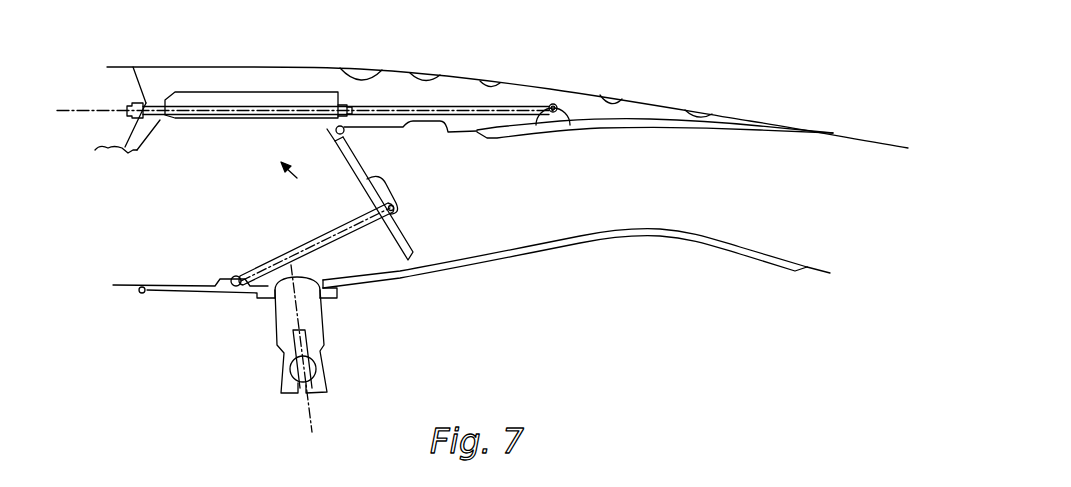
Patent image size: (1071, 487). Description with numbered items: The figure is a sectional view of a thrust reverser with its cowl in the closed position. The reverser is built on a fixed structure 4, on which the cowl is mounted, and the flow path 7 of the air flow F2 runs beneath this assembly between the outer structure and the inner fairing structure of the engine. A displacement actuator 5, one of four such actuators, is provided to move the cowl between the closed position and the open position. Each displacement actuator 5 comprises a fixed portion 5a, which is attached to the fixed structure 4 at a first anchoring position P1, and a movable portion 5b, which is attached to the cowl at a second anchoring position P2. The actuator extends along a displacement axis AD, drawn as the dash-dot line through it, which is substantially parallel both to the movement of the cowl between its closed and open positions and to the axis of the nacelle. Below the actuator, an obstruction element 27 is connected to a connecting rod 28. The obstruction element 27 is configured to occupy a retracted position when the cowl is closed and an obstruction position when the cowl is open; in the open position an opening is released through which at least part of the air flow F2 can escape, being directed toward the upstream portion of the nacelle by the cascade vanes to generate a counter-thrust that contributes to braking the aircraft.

The fixed structure 4 is at (122, 77).
The first anchoring position P1 is at (150, 100).
The displacement axis AD is at (92, 108).
The displacement actuator 5 is at (338, 66).
The fixed portion 5a is at (210, 106).
The movable portion 5b is at (433, 107).
The second anchoring position P2 is at (557, 100).
The air flow F2 is at (297, 178).
The obstruction element 27 is at (360, 171).
The connecting rod 28 is at (342, 236).
The flow path 7 is at (557, 217).